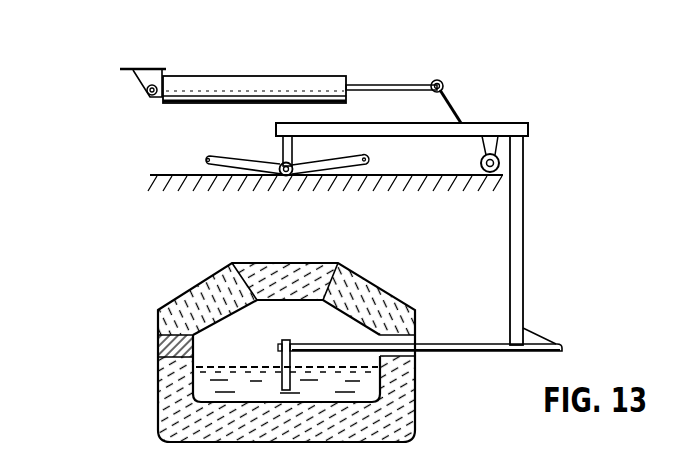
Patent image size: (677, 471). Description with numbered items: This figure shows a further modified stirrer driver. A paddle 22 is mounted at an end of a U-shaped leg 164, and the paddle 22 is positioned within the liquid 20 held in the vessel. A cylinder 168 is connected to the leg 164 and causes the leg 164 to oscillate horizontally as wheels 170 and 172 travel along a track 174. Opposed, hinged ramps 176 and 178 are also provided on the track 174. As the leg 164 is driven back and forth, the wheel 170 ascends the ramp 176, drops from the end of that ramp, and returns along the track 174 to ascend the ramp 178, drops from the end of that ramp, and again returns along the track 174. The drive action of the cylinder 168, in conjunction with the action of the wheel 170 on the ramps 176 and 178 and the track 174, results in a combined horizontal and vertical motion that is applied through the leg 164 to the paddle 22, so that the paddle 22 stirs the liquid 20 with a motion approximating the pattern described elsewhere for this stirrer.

The cylinder 168 is at (308, 83).
The wheel 170 is at (281, 165).
The wheel 172 is at (481, 162).
The track 174 is at (185, 178).
The ramp 176 is at (218, 157).
The ramp 178 is at (369, 155).
The U-shaped leg 164 is at (475, 343).
The liquid 20 is at (243, 378).
The paddle 22 is at (283, 360).